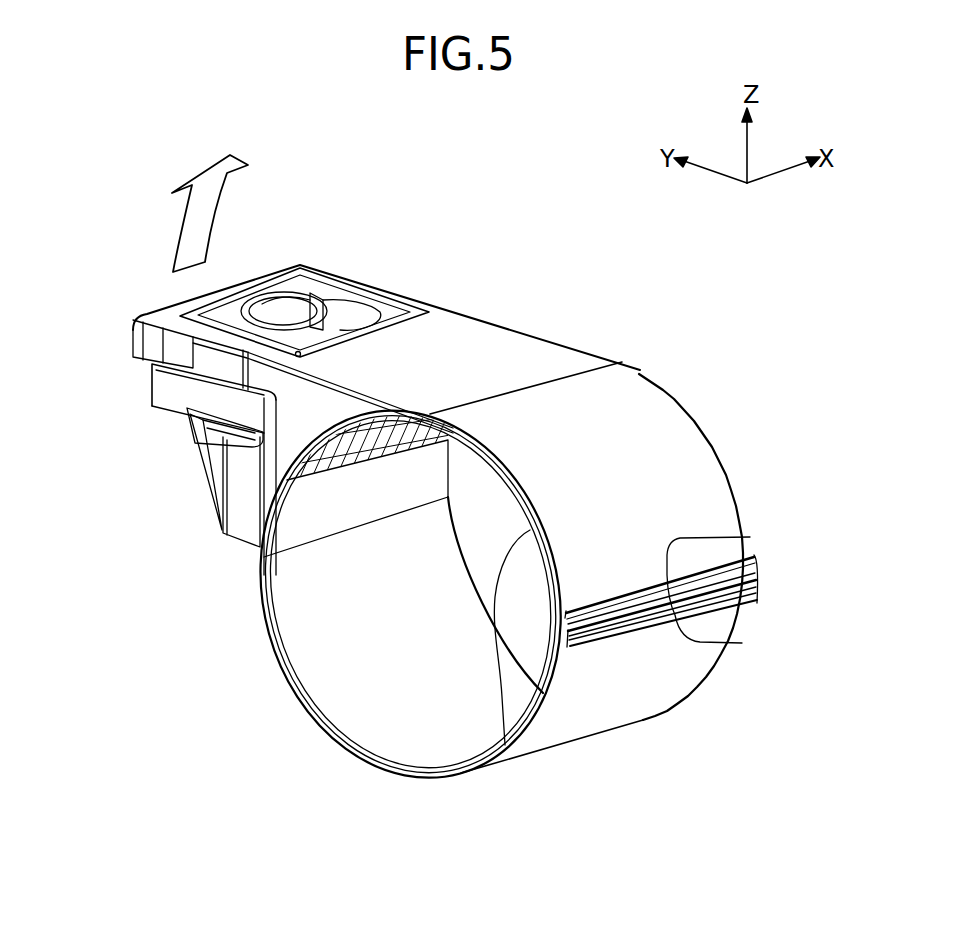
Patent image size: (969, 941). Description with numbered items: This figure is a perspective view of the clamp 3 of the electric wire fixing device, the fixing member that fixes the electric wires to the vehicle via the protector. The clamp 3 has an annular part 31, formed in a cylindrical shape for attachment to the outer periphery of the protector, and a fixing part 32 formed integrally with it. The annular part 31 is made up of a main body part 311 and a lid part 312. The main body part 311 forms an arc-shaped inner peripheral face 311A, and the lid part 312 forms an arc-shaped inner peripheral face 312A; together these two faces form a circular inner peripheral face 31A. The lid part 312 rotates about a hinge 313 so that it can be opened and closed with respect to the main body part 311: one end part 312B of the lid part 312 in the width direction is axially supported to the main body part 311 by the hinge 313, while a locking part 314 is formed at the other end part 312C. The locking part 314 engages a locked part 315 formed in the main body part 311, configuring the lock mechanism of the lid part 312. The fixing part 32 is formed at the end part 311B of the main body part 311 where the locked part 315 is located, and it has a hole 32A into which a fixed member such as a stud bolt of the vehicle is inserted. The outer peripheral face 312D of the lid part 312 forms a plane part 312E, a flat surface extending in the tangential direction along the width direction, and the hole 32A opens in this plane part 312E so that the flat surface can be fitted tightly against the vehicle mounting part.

The clamp 3 is at (657, 328).
The annular part 31 is at (712, 442).
The main body part 311 is at (397, 780).
The inner peripheral face 31A is at (367, 725).
The inner peripheral face 311A is at (320, 672).
The end part 311B is at (150, 383).
The lid part 312 is at (640, 371).
The inner peripheral face 312A is at (505, 745).
The one end part 312B is at (680, 540).
The other end part 312C is at (160, 316).
The outer peripheral face 312D is at (570, 390).
The plane part 312E is at (483, 347).
The hinge 313 is at (687, 640).
The locking part 314 is at (190, 420).
The locked part 315 is at (173, 388).
The fixing part 32 is at (385, 305).
The hole 32A is at (290, 312).